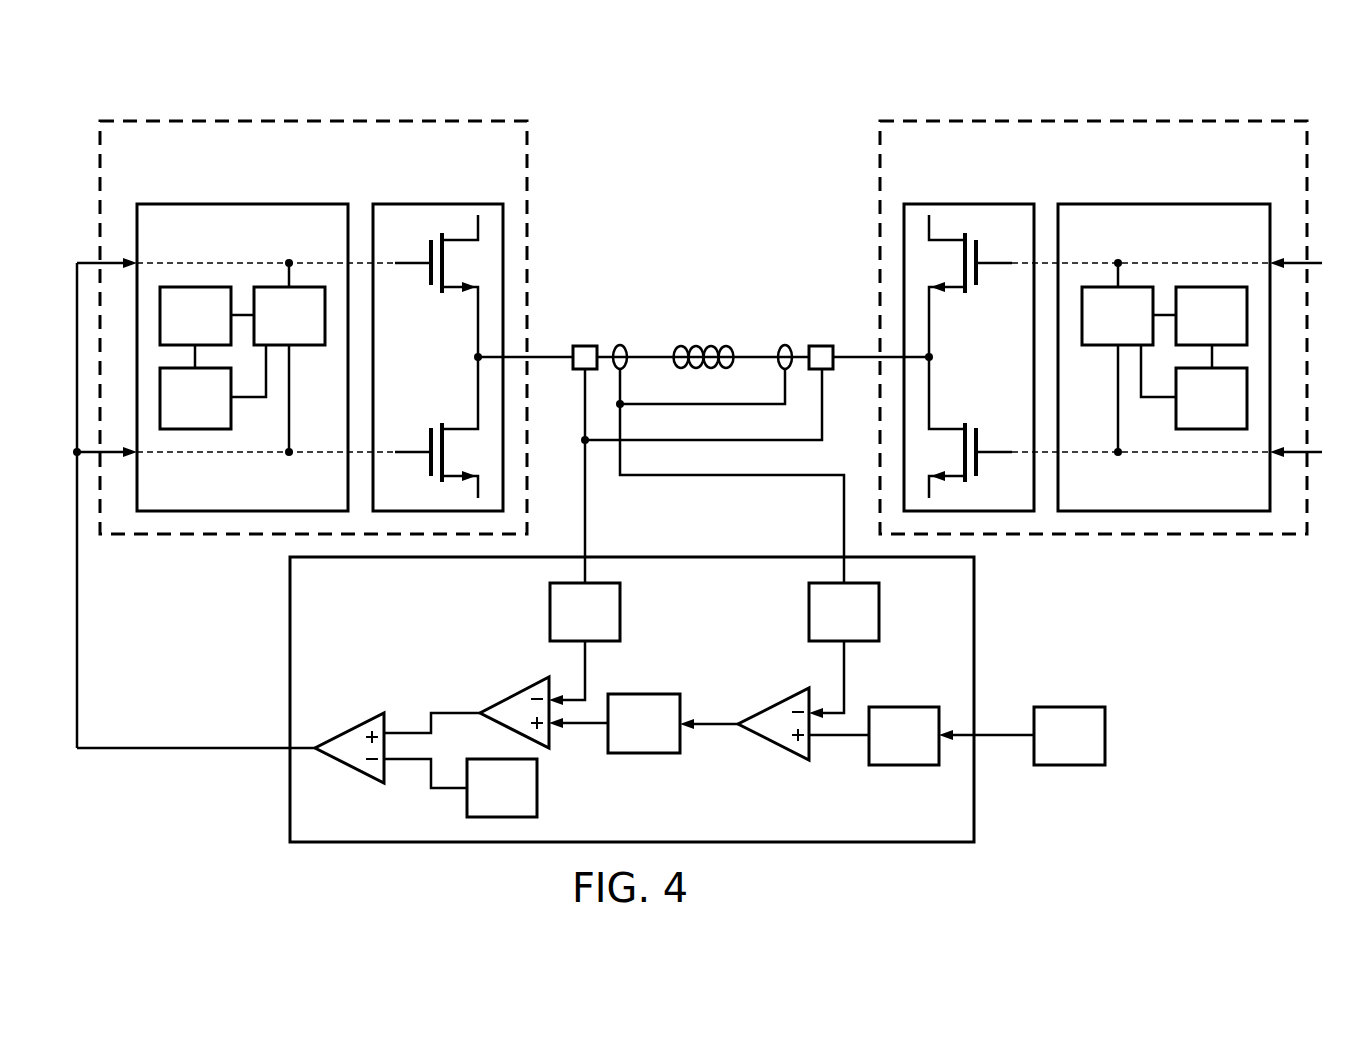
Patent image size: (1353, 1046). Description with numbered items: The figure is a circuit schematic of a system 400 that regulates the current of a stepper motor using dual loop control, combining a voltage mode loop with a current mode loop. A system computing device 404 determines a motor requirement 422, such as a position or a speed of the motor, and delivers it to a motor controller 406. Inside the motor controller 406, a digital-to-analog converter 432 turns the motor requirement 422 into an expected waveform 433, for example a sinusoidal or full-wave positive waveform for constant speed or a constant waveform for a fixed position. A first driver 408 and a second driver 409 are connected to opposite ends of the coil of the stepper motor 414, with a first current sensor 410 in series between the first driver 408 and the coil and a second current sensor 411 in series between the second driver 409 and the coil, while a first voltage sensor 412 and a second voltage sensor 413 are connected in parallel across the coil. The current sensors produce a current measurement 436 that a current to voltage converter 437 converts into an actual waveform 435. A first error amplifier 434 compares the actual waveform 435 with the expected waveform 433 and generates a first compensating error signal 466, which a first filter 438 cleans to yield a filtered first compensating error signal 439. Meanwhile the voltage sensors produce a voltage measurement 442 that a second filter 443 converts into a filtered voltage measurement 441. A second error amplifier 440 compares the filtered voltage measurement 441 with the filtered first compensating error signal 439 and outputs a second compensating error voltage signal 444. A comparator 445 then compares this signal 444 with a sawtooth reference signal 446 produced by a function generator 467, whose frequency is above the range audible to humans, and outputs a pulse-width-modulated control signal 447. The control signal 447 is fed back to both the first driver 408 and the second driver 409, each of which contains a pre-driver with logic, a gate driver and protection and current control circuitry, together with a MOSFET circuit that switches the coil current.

The system 400 is at (812, 80).
The system computing device 404 is at (1092, 749).
The motor controller 406 is at (278, 703).
The first driver 408 is at (296, 110).
The second driver 409 is at (1109, 110).
The first current sensor 410 is at (620, 344).
The second current sensor 411 is at (782, 344).
The first voltage sensor 412 is at (580, 345).
The second voltage sensor 413 is at (826, 345).
The coil of a stepper motor 414 is at (712, 345).
The motor requirement 422 is at (995, 736).
The digital-to-analog converter 432 is at (926, 749).
The expected waveform 433 is at (830, 737).
The first error amplifier 434 is at (773, 703).
The actual waveform 435 is at (845, 670).
The current measurement 436 is at (842, 517).
The current to voltage converter 437 is at (866, 625).
The first filter 438 is at (666, 736).
The filtered first compensating error signal 439 is at (586, 726).
The second error amplifier 440 is at (513, 692).
The filtered voltage measurement 441 is at (587, 657).
The voltage measurement 442 is at (588, 517).
The second filter 443 is at (607, 625).
The second compensating error voltage signal 444 is at (418, 732).
The comparator 445 is at (347, 768).
The reference signal 446 is at (415, 760).
The control signal 447 is at (183, 749).
The first compensating error signal 466 is at (715, 726).
The function generator 467 is at (524, 801).